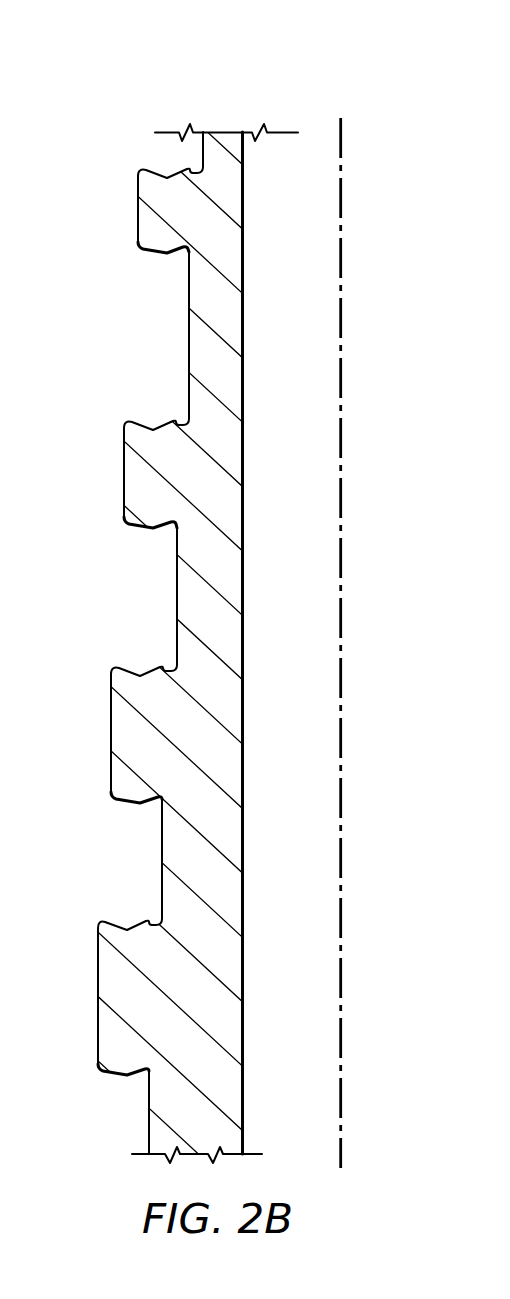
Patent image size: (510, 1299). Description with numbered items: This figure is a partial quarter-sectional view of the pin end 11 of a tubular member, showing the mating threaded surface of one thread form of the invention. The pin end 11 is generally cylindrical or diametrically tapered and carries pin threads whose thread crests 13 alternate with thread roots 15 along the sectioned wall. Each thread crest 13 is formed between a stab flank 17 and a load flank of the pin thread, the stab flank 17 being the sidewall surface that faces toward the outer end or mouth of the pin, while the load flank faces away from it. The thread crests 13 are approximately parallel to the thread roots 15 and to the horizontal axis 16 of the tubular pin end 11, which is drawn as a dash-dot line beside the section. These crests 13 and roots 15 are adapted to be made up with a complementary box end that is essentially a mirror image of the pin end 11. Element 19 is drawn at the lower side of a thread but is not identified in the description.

The pin end 11 is at (272, 70).
The thread crest 13 is at (111, 724).
The thread root 15 is at (176, 586).
The horizontal axis 16 is at (342, 980).
The stab flank 17 is at (140, 663).
The lower surface of tooth 19 is at (120, 808).